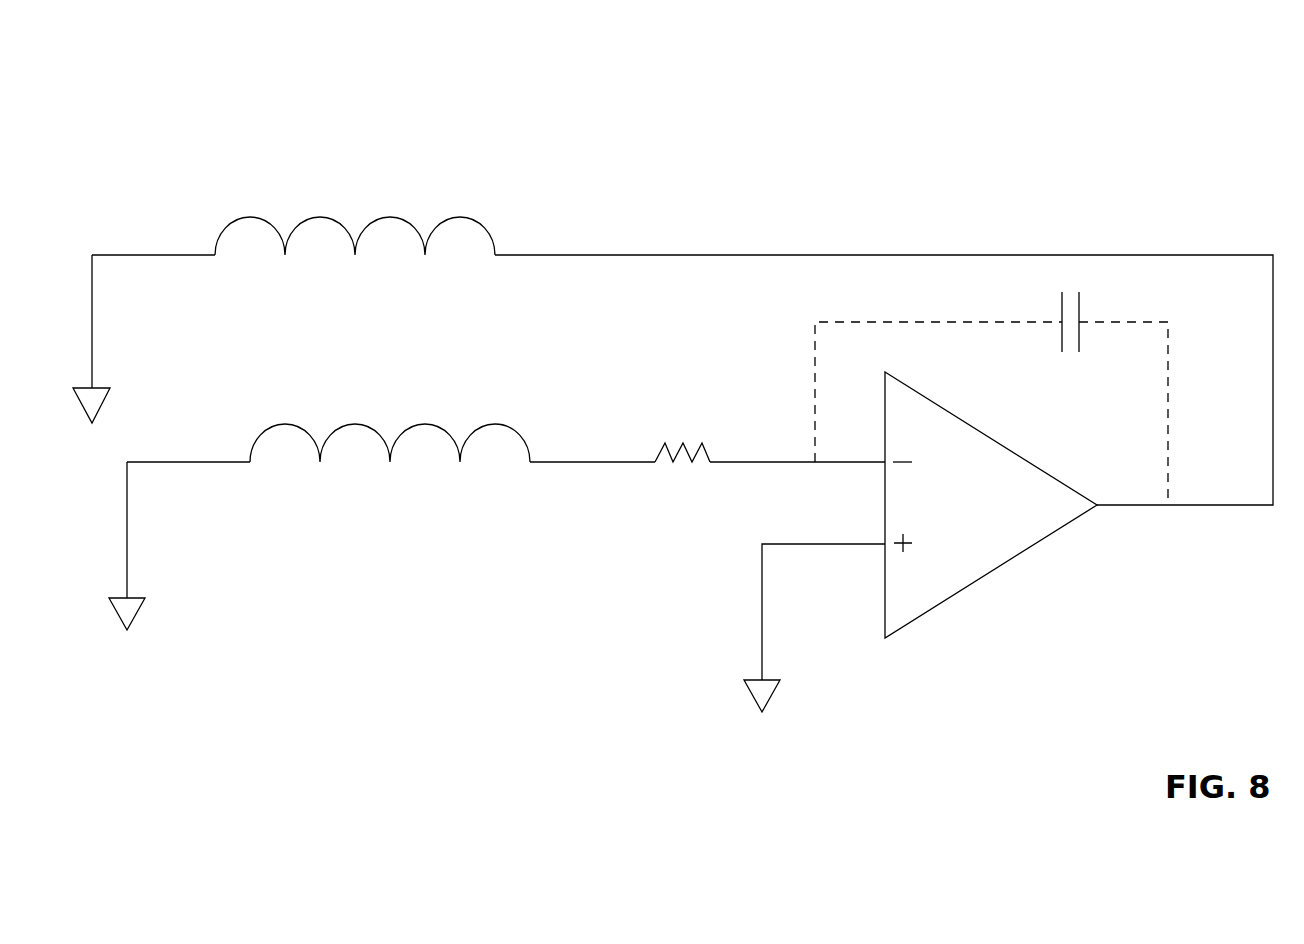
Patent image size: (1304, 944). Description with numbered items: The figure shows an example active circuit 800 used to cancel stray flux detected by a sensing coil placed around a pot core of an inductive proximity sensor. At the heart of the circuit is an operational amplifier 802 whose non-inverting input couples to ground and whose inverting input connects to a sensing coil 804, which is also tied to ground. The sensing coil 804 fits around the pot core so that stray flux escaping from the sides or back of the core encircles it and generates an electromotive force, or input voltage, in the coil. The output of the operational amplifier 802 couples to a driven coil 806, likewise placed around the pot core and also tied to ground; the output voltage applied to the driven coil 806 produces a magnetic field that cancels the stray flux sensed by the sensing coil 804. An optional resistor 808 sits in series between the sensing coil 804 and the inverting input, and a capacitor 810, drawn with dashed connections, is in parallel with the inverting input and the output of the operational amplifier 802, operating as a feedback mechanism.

The active circuit 800 is at (1170, 96).
The operational amplifier 802 is at (995, 478).
The sensing coil 804 is at (500, 403).
The driven coil 806 is at (465, 193).
The resistor 808 is at (685, 425).
The capacitor 810 is at (1087, 310).